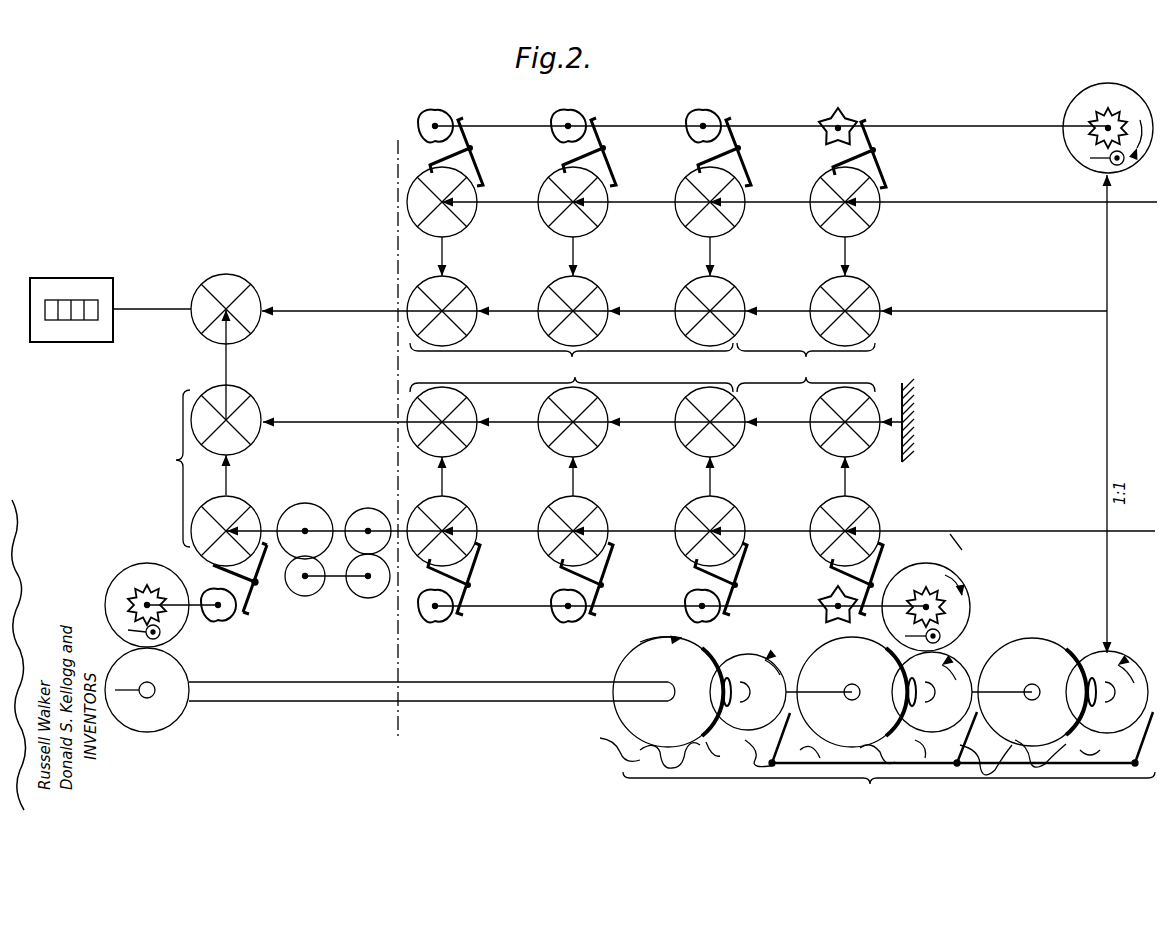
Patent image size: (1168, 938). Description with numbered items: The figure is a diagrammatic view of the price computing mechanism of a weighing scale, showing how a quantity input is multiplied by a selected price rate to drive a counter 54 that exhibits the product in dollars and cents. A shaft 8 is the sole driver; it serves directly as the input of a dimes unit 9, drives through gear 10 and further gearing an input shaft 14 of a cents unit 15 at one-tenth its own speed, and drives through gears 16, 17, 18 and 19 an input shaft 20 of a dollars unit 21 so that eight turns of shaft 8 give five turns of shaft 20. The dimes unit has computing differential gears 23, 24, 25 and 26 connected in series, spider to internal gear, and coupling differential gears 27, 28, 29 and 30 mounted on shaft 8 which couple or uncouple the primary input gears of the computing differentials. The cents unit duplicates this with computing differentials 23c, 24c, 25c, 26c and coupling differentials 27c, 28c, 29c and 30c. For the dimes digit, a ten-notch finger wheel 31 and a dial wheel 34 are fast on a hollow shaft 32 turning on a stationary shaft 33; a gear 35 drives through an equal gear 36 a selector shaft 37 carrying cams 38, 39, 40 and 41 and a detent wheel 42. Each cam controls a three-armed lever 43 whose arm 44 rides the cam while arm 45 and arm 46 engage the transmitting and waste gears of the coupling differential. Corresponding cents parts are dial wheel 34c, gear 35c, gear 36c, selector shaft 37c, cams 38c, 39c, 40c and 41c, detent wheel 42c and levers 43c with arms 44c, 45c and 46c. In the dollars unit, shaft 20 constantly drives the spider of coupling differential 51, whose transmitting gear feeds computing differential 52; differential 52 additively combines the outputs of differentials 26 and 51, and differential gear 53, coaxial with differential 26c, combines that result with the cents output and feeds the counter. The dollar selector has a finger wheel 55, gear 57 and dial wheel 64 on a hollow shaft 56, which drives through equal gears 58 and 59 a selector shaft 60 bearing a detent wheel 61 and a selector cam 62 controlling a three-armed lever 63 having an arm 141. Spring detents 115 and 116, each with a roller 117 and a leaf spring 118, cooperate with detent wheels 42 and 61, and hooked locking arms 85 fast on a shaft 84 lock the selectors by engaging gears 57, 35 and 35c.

The shaft 8 is at (690, 535).
The dimes unit 9 is at (571, 367).
The gear 10 is at (382, 157).
The input shaft 14 is at (1062, 198).
The cents unit 15 is at (781, 367).
The gear 16 is at (366, 510).
The gear 17 is at (365, 598).
The gear 18 is at (312, 596).
The gear 19 is at (304, 505).
The input shaft 20 is at (266, 528).
The dollars unit 21 is at (119, 468).
The computing differential gear 23 is at (812, 408).
The computing differential gear 24 is at (678, 410).
The computing differential gear 25 is at (542, 410).
The computing differential gear 26 is at (410, 410).
The coupling differential gear 27 is at (830, 500).
The coupling differential gear 28 is at (695, 500).
The coupling differential gear 29 is at (558, 500).
The coupling differential gear 30 is at (428, 500).
The computing differential gear 23c is at (830, 280).
The computing differential gear 24c is at (692, 278).
The computing differential gear 25c is at (555, 278).
The computing differential gear 26c is at (422, 280).
The coupling differential gear 27c is at (811, 218).
The coupling differential gear 28c is at (676, 218).
The coupling differential gear 29c is at (540, 218).
The coupling differential gear 30c is at (410, 208).
The operating finger wheel 31 is at (828, 775).
The hollow shaft 32 is at (922, 700).
The stationary shaft 33 is at (785, 680).
The dial wheel 34 is at (822, 660).
The dial wheel 34c is at (1042, 625).
The gear 35 is at (965, 672).
The gear 35c is at (1112, 660).
The gear 36 is at (962, 588).
The gear 36c is at (1070, 103).
The selector shaft 37 is at (755, 609).
The selector shaft 37c is at (771, 111).
The cam 38 is at (815, 614).
The cam 38c is at (832, 112).
The cam 39 is at (705, 622).
The cam 39c is at (698, 108).
The cam 40 is at (565, 622).
The cam 40c is at (563, 108).
The cam 41 is at (437, 622).
The cam 41c is at (430, 108).
The detent wheel 42 is at (948, 604).
The detent wheel 42c is at (1105, 108).
The three-armed lever 43 is at (486, 570).
The three-armed lever 43c is at (486, 165).
The arm 44 is at (880, 598).
The arm 44c is at (875, 122).
The arm 45 is at (832, 572).
The arm 45c is at (832, 165).
The arm 46 is at (895, 548).
The arm 46c is at (886, 180).
The coupling differential 51 is at (210, 496).
The computing differential gear 52 is at (210, 387).
The differential gear 53 is at (215, 272).
The counter 54 is at (68, 333).
The finger wheel 55 is at (618, 745).
The hollow shaft 56 is at (462, 705).
The gear 57 is at (728, 716).
The gear 58 is at (172, 712).
The gear 59 is at (155, 572).
The selector shaft 60 is at (180, 585).
The detent wheel 61 is at (135, 590).
The selector cam 62 is at (225, 622).
The three-armed lever 63 is at (258, 598).
The dial wheel 64 is at (638, 658).
The shaft 84 is at (975, 766).
The hooked locking arm 85 is at (945, 740).
The spring detent 115 is at (872, 680).
The spring detent 116 is at (143, 641).
The roller 117 is at (940, 634).
The leaf spring 118 is at (916, 640).
The arm 141 is at (900, 438).